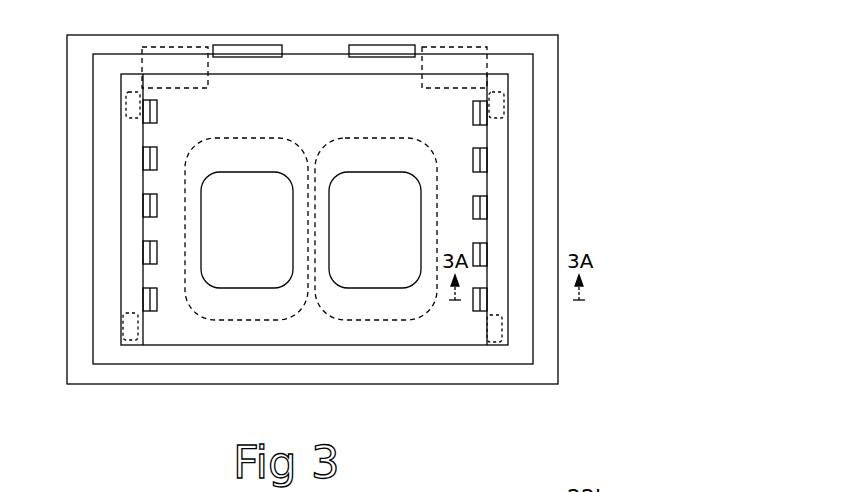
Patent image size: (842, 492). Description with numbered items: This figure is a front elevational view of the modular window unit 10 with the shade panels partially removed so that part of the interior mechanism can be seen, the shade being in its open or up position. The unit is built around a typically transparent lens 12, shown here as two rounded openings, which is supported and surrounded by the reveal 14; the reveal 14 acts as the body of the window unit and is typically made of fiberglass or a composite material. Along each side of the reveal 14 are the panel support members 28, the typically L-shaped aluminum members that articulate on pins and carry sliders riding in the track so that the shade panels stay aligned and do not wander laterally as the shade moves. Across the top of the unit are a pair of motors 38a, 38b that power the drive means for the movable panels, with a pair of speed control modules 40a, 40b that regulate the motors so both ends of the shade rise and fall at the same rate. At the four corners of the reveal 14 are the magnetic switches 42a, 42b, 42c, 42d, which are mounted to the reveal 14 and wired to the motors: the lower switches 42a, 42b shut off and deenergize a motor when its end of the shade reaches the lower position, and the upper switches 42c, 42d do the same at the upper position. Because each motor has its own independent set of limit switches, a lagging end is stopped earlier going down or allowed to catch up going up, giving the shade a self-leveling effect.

The modular window unit 10 is at (600, 207).
The lens 12 is at (262, 242).
The reveal 14 is at (322, 342).
The panel support member 28 is at (471, 116).
The motor 38a is at (183, 44).
The motor 38b is at (462, 44).
The speed control module 40a is at (255, 44).
The speed control module 40b is at (373, 44).
The magnetic switch 42a is at (514, 340).
The magnetic switch 42b is at (123, 340).
The magnetic switch 42c is at (505, 108).
The magnetic switch 42d is at (125, 105).